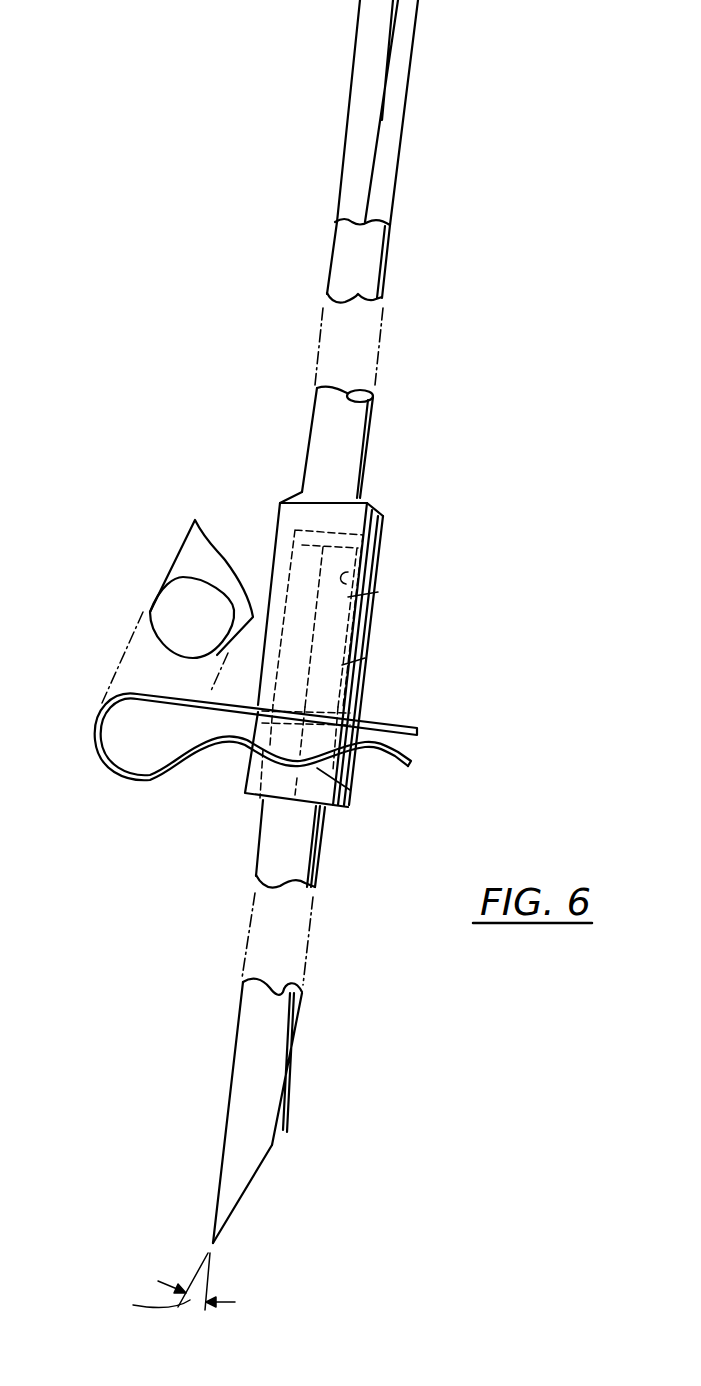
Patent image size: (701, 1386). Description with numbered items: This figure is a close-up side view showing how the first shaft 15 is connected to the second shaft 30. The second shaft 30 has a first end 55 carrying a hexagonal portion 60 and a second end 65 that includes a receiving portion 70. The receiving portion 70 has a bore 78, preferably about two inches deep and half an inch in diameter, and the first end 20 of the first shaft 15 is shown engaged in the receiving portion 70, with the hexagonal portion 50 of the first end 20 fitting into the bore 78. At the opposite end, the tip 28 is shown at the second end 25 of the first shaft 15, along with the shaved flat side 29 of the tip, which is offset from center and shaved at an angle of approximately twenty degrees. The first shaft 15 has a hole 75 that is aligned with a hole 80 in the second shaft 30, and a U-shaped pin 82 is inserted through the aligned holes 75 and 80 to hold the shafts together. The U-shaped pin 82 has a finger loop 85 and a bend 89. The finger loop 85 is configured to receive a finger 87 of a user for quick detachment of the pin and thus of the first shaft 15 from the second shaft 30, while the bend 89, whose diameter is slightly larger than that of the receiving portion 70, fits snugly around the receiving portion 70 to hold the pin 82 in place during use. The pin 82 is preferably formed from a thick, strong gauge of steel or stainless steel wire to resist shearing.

The first shaft 15 is at (332, 858).
The first end of the first shaft 20 is at (343, 661).
The second end of the first shaft 25 is at (235, 1108).
The tip 28 is at (220, 1180).
The shaved flat side 29 is at (255, 1180).
The second shaft 30 is at (380, 435).
The hexagonal portion of the first shaft 50 is at (353, 594).
The first end of the second shaft 55 is at (370, 253).
The hexagonal portion of the second shaft 60 is at (395, 101).
The second end of the second shaft 65 is at (373, 607).
The receiving portion 70 is at (358, 525).
The hole in the first shaft 75 is at (362, 700).
The bore 78 is at (348, 578).
The hole in the second shaft 80 is at (257, 721).
The U-shaped pin 82 is at (412, 724).
The finger loop 85 is at (108, 765).
The finger 87 is at (162, 570).
The bend 89 is at (330, 772).